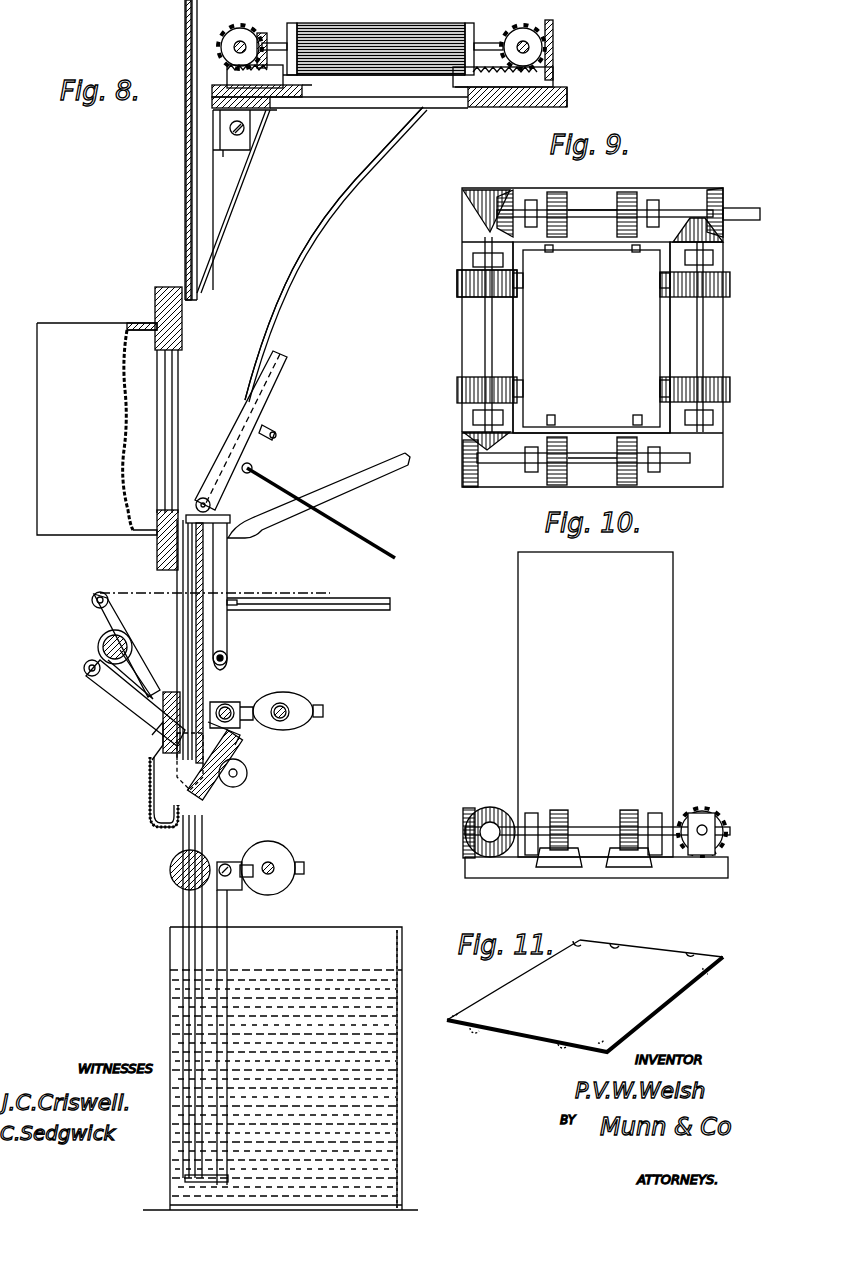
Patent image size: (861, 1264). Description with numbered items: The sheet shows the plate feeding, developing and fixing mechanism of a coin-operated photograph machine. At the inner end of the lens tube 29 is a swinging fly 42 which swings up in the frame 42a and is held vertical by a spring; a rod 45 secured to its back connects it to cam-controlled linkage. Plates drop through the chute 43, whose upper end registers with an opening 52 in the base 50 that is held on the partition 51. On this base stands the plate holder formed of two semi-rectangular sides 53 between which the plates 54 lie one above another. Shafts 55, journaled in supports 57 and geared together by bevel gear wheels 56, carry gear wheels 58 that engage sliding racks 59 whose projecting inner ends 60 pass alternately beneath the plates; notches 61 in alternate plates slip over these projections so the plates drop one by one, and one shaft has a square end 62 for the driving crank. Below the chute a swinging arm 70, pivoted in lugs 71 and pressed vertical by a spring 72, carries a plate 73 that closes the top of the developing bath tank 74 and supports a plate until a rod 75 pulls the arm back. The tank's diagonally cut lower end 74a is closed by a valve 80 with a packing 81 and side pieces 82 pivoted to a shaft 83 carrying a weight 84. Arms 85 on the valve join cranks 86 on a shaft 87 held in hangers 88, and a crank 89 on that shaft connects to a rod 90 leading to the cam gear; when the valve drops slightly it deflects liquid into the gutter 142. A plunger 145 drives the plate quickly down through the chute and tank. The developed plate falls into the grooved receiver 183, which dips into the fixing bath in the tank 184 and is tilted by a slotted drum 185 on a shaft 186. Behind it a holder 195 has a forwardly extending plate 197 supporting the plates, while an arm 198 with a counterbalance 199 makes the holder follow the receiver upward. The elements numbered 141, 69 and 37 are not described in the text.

In FIG. 8, the plunger 145 is at (186, 240).
In FIG. 8, the base 50 is at (300, 104).
In FIG. 9, the base 50 is at (718, 468).
In FIG. 10, the base 50 is at (690, 870).
In FIG. 8, the partition 51 is at (568, 100).
In FIG. 8, the opening 52 is at (374, 83).
In FIG. 9, the opening 52 is at (591, 338).
In FIG. 8, the sides 53 is at (292, 25).
In FIG. 9, the sides 53 is at (600, 256).
In FIG. 10, the sides 53 is at (595, 704).
In FIG. 8, the plates 54 is at (381, 39).
In FIG. 11, the plates 54 is at (585, 996).
In FIG. 8, the shafts 55 is at (283, 43).
In FIG. 9, the shafts 55 is at (686, 208).
In FIG. 10, the shafts 55 is at (586, 827).
In FIG. 8, the bevel gear wheels 56 is at (557, 42).
In FIG. 9, the bevel gear wheels 56 is at (512, 195).
In FIG. 10, the bevel gear wheels 56 is at (490, 807).
In FIG. 9, the supports 57 is at (530, 200).
In FIG. 10, the supports 57 is at (665, 812).
In FIG. 8, the gear wheels 58 is at (240, 25).
In FIG. 9, the gear wheels 58 is at (605, 210).
In FIG. 10, the gear wheels 58 is at (559, 810).
In FIG. 8, the sliding racks 59 is at (562, 70).
In FIG. 9, the sliding racks 59 is at (560, 192).
In FIG. 8, the projecting inner ends 60 is at (262, 33).
In FIG. 9, the projecting inner ends 60 is at (549, 253).
In FIG. 9, the square end 62 is at (752, 208).
In FIG. 9, the gear 69 is at (457, 290).
In FIG. 8, the lens tube 29 is at (97, 429).
In FIG. 8, the swinging fly 42 is at (270, 395).
In FIG. 8, the frame 42a is at (182, 312).
In FIG. 8, the chute 43 is at (333, 253).
In FIG. 8, the rod 45 is at (318, 510).
In FIG. 8, the rail 141 is at (374, 460).
In FIG. 8, the plate 73 is at (228, 520).
In FIG. 8, the swinging arm 70 is at (228, 577).
In FIG. 8, the lugs 71 is at (228, 664).
In FIG. 8, the spring 72 is at (230, 652).
In FIG. 8, the developing bath tank 74 is at (205, 688).
In FIG. 8, the diagonally cut lower end 74a is at (192, 775).
In FIG. 8, the rod 75 is at (310, 598).
In FIG. 8, the valve 80 is at (243, 755).
In FIG. 8, the packing 81 is at (236, 787).
In FIG. 8, the side pieces 82 is at (242, 736).
In FIG. 8, the shaft 83 is at (235, 706).
In FIG. 8, the weight 84 is at (305, 702).
In FIG. 8, the arms 85 is at (150, 705).
In FIG. 8, the cranks 86 is at (102, 643).
In FIG. 8, the shaft 87 is at (128, 640).
In FIG. 8, the hangers 88 is at (138, 664).
In FIG. 8, the crank 89 is at (105, 592).
In FIG. 8, the rod 90 is at (138, 593).
In FIG. 8, the gutter 142 is at (150, 840).
In FIG. 8, the grooved receiver 183 is at (203, 842).
In FIG. 8, the tank 184 is at (303, 970).
In FIG. 8, the slotted drum 185 is at (216, 862).
In FIG. 8, the shaft 186 is at (233, 884).
In FIG. 8, the holder 195 is at (228, 960).
In FIG. 8, the plate 197 is at (187, 1182).
In FIG. 8, the arm 198 is at (305, 868).
In FIG. 8, the counterbalance 199 is at (284, 857).
In FIG. 10, the collar 37 is at (531, 813).
In FIG. 11, the notches 61 is at (577, 950).